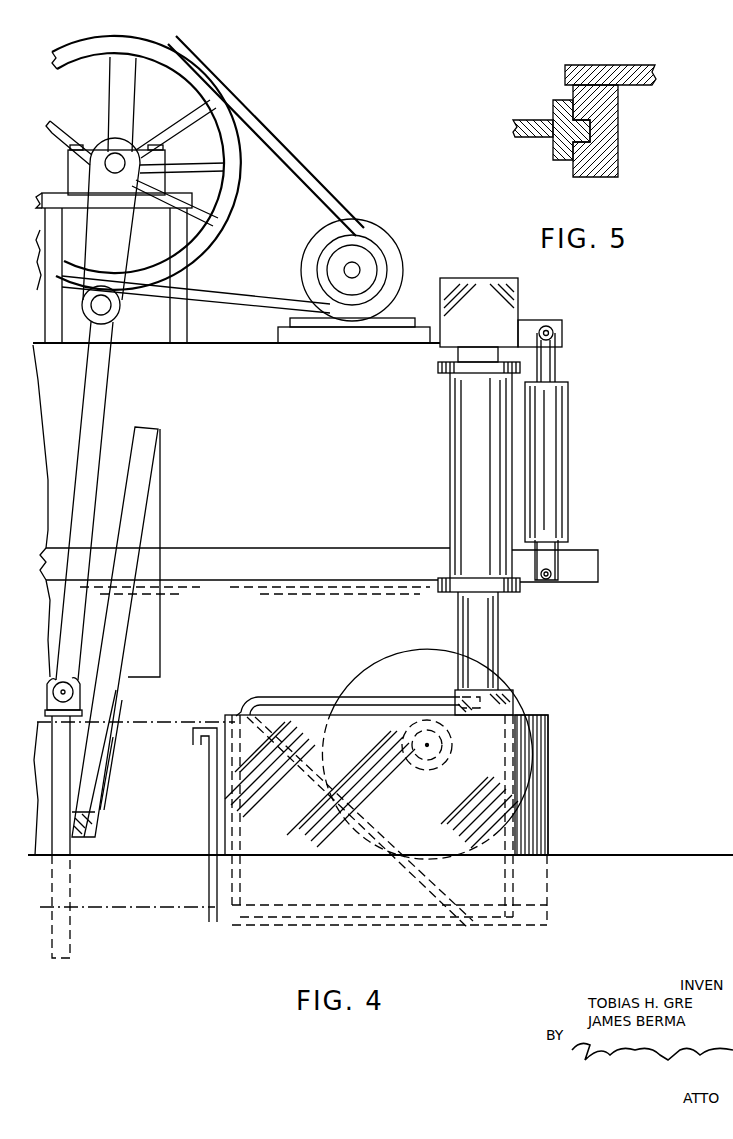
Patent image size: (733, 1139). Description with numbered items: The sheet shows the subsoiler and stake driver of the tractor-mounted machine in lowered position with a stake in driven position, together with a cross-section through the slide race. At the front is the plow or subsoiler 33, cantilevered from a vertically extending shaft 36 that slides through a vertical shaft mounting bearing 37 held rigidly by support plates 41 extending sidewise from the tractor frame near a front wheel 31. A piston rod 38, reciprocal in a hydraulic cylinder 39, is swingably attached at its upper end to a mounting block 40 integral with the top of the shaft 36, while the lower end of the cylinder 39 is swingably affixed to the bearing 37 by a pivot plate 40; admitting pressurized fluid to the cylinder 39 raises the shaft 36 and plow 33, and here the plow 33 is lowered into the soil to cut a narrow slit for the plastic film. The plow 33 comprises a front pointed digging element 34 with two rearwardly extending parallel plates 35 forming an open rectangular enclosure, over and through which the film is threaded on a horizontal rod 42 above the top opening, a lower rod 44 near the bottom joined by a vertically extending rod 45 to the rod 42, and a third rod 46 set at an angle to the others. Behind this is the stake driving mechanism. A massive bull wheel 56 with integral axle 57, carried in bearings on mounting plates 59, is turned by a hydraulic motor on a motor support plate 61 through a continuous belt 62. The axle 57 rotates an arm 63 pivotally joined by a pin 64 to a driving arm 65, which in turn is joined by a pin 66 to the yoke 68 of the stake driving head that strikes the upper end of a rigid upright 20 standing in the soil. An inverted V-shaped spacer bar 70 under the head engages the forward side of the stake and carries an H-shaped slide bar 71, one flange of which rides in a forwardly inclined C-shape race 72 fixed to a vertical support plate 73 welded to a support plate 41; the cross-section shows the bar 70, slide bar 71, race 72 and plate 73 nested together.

In FIG. 4, the rigid upright 20 is at (65, 890).
In FIG. 4, the front wheel 31 is at (498, 684).
In FIG. 4, the plow or subsoiler 33 is at (552, 746).
In FIG. 4, the digging element 34 is at (535, 798).
In FIG. 4, the plates 35 is at (283, 720).
In FIG. 4, the vertically extending shaft 36 is at (483, 633).
In FIG. 4, the shaft mounting bearing 37 is at (455, 407).
In FIG. 4, the piston rod 38 is at (548, 371).
In FIG. 4, the hydraulic cylinder 39 is at (555, 433).
In FIG. 4, the mounting block / pivot plate 40 is at (475, 285).
In FIG. 4, the support plate 41 is at (320, 553).
In FIG. 4, the horizontal rod 42 is at (318, 697).
In FIG. 4, the lower rod 44 is at (265, 924).
In FIG. 4, the vertically extending rod 45 is at (232, 895).
In FIG. 4, the third rod 46 is at (418, 878).
In FIG. 4, the bull wheel 56 is at (178, 48).
In FIG. 4, the axle 57 is at (119, 160).
In FIG. 4, the mounting plates 59 is at (180, 271).
In FIG. 4, the motor support plate 61 is at (290, 336).
In FIG. 4, the continuous belt 62 is at (285, 153).
In FIG. 4, the arm 63 is at (122, 239).
In FIG. 4, the pin 64 is at (118, 311).
In FIG. 4, the driving arm 65 is at (94, 387).
In FIG. 4, the pin 66 is at (380, 230).
In FIG. 4, the yoke 68 is at (55, 680).
In FIG. 4, the inverted V-shaped spacer bar 70 is at (78, 756).
In FIG. 5, the inverted V-shaped spacer bar 70 is at (527, 120).
In FIG. 4, the H-shaped slide bar 71 is at (100, 791).
In FIG. 5, the H-shaped slide bar 71 is at (553, 162).
In FIG. 4, the C-shape race 72 is at (138, 508).
In FIG. 5, the C-shape race 72 is at (618, 160).
In FIG. 5, the vertical support plate 73 is at (600, 65).